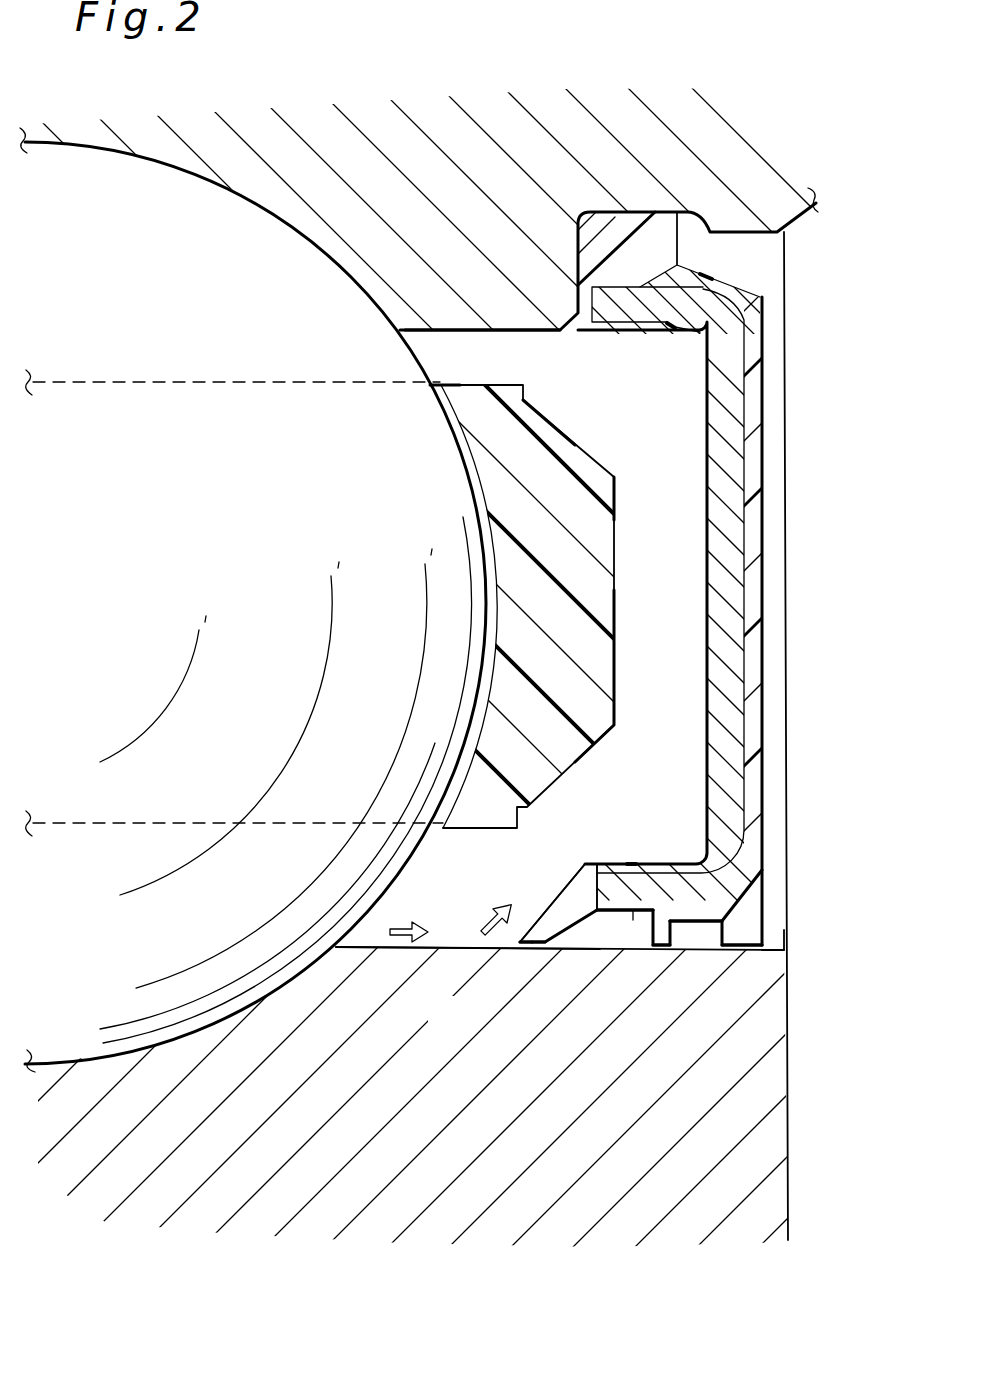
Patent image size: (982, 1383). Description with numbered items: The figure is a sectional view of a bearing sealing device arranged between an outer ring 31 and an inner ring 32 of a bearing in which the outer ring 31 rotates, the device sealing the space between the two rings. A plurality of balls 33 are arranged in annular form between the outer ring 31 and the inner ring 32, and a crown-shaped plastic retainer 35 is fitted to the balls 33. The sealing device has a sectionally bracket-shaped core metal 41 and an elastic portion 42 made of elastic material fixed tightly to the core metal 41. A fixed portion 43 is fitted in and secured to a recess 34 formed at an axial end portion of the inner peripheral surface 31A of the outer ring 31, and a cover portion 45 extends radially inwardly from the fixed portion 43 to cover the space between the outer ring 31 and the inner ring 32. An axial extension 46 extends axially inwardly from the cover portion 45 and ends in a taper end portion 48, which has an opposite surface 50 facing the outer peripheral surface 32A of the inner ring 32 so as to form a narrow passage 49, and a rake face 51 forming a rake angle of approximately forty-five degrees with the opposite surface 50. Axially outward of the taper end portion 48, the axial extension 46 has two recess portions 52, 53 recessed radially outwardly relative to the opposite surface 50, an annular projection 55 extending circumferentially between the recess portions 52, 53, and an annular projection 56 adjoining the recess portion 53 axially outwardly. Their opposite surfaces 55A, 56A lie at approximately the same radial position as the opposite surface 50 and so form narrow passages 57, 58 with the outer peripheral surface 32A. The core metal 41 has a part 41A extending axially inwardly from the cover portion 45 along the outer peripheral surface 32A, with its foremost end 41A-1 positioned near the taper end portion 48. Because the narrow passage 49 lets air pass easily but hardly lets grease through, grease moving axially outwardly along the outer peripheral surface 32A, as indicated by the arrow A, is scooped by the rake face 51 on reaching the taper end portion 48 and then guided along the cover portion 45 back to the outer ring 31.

The outer ring 31 is at (476, 201).
The inner peripheral surface 31A is at (457, 333).
The inner ring 32 is at (475, 1027).
The outer peripheral surface 32A is at (450, 947).
The balls 33 is at (205, 316).
The recess 34 is at (590, 217).
The crown-shaped plastic retainer 35 is at (550, 422).
The core metal 41 is at (706, 358).
The part of core metal 41A is at (662, 870).
The foremost end 41A-1 is at (597, 870).
The elastic portion 42 is at (748, 412).
The fixed portion 43 is at (655, 253).
The cover portion 45 is at (698, 464).
The axial extension 46 is at (629, 862).
The taper end portion 48 is at (563, 903).
The narrow passage 49 is at (523, 950).
The opposite surface 50 is at (540, 950).
The rake face 51 is at (585, 865).
The recess portion 52 is at (610, 914).
The recess portion 53 is at (700, 924).
The annular projection 55 is at (652, 950).
The opposite surface 55A is at (662, 928).
The annular projection 56 is at (740, 930).
The opposite surface 56A is at (758, 952).
The narrow passage 57 is at (633, 930).
The narrow passage 58 is at (790, 950).
The arrow A is at (405, 928).